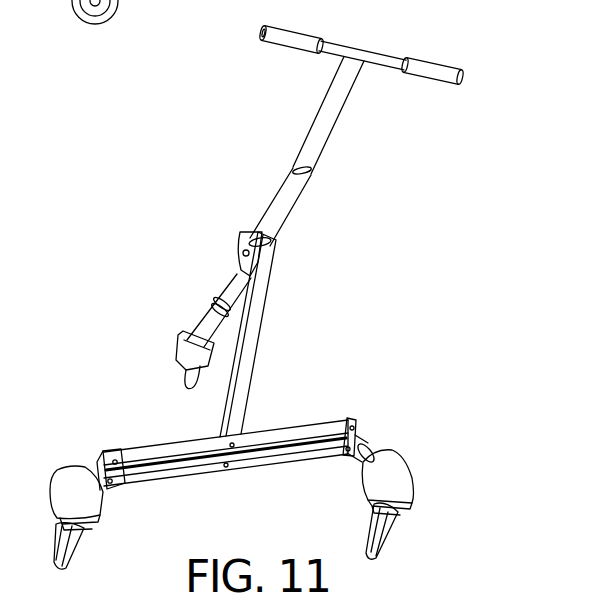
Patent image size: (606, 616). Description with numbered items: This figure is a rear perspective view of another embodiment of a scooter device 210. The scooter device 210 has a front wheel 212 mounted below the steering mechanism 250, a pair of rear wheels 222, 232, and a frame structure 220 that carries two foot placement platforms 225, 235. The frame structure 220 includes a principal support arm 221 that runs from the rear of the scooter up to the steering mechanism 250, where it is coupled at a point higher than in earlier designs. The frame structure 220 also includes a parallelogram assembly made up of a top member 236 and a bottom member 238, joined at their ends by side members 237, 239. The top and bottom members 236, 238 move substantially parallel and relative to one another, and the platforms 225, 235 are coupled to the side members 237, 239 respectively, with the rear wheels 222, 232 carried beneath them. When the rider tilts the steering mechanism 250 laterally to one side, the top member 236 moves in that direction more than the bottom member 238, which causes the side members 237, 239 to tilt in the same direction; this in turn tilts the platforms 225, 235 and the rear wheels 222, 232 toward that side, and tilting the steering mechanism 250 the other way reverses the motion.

The scooter device 210 is at (455, 153).
The front wheel 212 is at (189, 389).
The frame structure 220 is at (150, 375).
The principal support arm 221 is at (266, 304).
The rear wheel 222 is at (80, 558).
The foot placement platform 225 is at (67, 477).
The rear wheel 232 is at (383, 538).
The foot placement platform 235 is at (390, 480).
The top member 236 is at (305, 428).
The side member 237 is at (358, 437).
The bottom member 238 is at (257, 462).
The side member 239 is at (118, 480).
The steering mechanism 250 is at (425, 43).